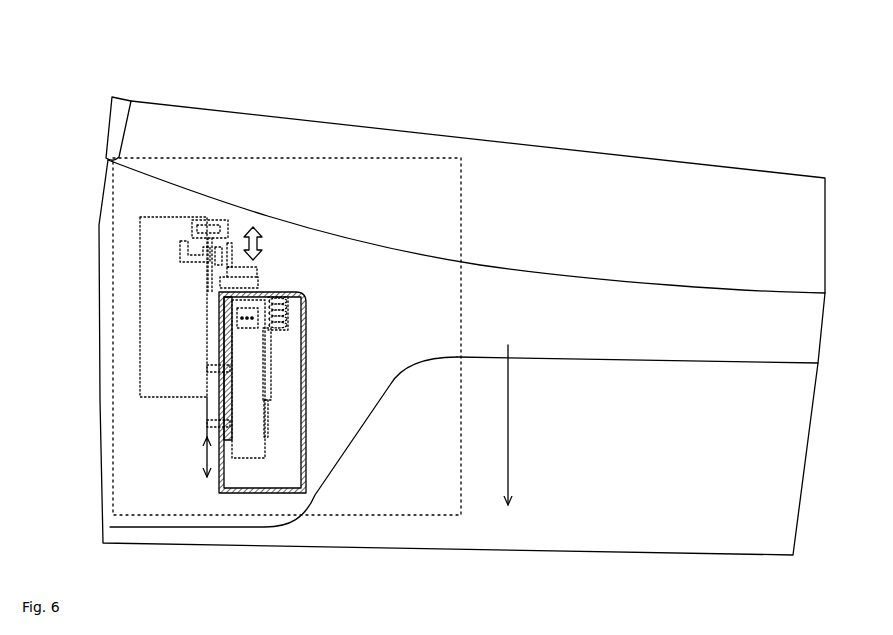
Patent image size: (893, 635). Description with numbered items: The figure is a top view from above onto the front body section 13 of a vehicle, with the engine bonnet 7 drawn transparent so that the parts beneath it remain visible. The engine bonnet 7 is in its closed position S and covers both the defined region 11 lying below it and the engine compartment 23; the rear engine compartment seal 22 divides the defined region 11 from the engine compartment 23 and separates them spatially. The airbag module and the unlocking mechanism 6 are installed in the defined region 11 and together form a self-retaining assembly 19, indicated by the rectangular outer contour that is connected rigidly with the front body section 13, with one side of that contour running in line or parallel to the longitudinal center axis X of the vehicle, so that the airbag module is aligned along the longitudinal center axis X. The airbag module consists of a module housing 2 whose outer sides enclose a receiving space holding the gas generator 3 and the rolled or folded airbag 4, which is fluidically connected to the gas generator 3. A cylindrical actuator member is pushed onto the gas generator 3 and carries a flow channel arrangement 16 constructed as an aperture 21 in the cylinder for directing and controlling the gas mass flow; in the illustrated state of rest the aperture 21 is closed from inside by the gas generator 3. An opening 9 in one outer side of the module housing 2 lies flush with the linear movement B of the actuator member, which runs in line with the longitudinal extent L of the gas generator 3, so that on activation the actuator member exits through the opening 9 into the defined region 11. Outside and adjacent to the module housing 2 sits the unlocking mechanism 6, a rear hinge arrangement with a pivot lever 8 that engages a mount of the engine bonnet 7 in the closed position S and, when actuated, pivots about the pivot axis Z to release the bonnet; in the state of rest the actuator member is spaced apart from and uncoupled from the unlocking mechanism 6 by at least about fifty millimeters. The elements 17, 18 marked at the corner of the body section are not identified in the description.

The module housing 2 is at (306, 428).
The gas generator 3 is at (248, 382).
The airbag 4 is at (283, 311).
The unlocking mechanism 6 is at (242, 279).
The engine bonnet 7 is at (499, 328).
The closed position S is at (172, 265).
The pivot lever 8 is at (212, 232).
The opening 9 is at (262, 292).
The defined region 11 is at (412, 331).
The front body section 13 is at (490, 138).
The flow channel arrangement 16 is at (311, 377).
The aperture 21 is at (275, 336).
The pillar 17 is at (79, 128).
The pillar end 18 is at (107, 158).
The self-retaining assembly 19 is at (401, 183).
The rear engine compartment seal 22 is at (648, 359).
The engine compartment 23 is at (600, 440).
The longitudinal center axis X is at (499, 420).
The pivot axis Z is at (232, 248).
The linear movement B is at (260, 243).
The longitudinal extent L is at (198, 457).